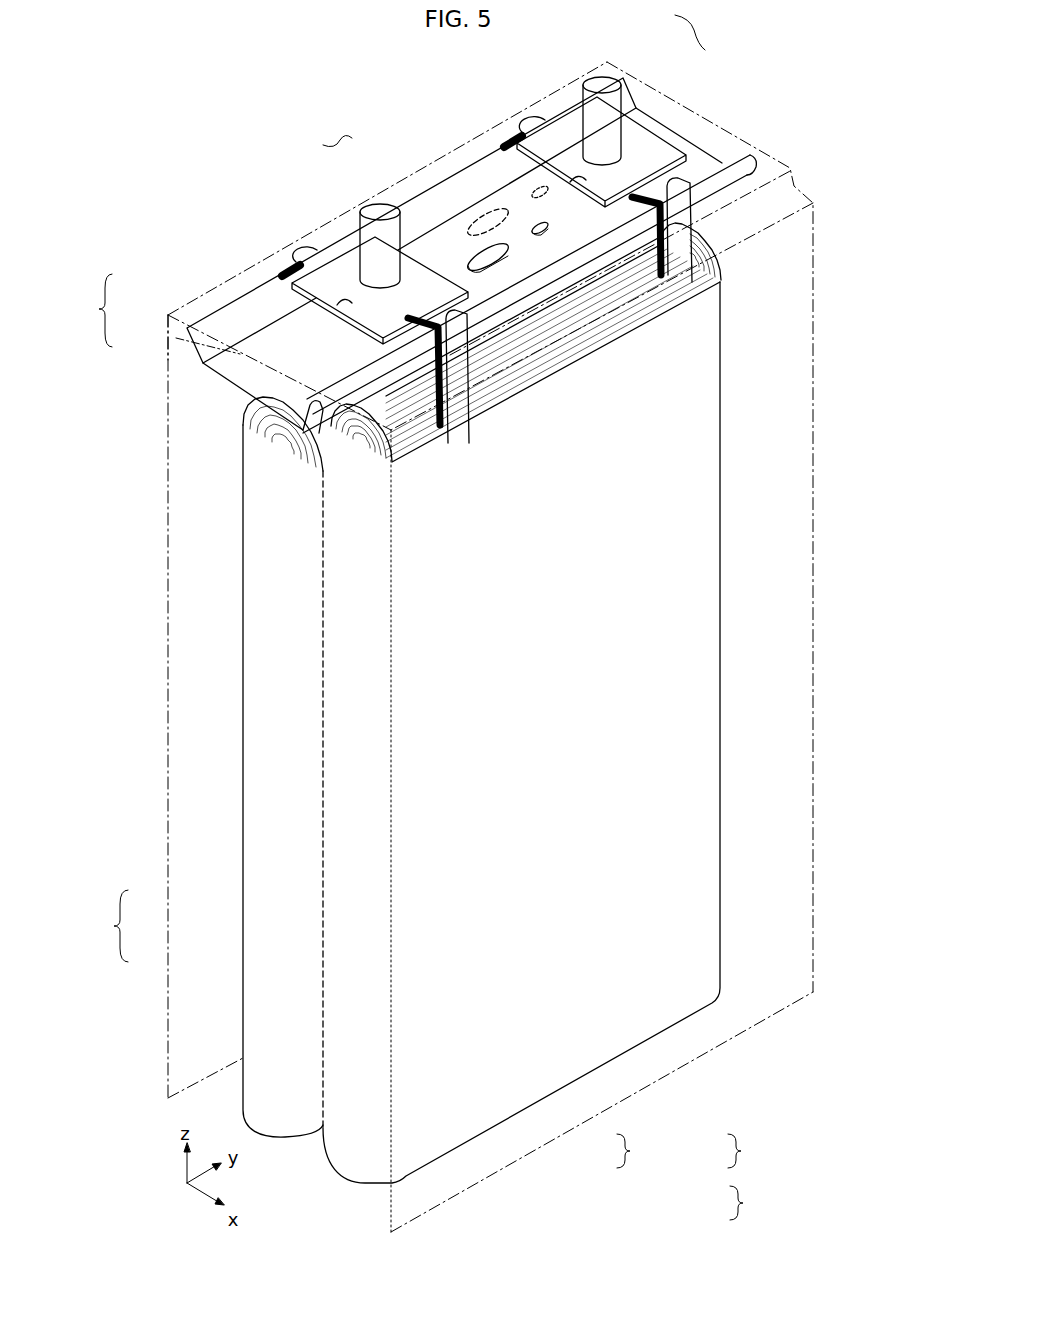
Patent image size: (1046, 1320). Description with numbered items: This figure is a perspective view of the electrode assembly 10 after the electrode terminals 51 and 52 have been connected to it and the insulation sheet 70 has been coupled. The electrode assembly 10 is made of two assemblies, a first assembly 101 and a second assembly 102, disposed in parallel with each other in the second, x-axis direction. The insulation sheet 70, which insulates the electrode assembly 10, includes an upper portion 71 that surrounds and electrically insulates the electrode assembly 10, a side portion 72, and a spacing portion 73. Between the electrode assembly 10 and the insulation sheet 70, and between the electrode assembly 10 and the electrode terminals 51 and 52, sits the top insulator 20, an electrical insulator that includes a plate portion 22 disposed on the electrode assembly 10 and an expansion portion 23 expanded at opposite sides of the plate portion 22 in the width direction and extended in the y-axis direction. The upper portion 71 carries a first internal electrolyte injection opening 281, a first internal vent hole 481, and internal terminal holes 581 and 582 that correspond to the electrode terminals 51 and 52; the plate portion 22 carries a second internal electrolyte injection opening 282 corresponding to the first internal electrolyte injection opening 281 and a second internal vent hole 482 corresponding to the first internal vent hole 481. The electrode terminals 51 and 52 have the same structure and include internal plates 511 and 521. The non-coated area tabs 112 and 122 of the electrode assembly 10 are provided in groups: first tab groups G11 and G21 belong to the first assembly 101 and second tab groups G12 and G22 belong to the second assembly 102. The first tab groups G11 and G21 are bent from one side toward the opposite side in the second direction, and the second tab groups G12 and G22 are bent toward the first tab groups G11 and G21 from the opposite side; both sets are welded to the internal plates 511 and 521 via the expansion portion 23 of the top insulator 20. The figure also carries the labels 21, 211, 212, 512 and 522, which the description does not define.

The electrode assembly 10 is at (407, 625).
The first assembly 101 is at (255, 903).
The second assembly 102 is at (330, 960).
The non-coated area tab 112 is at (468, 686).
The non-coated area tab 122 is at (645, 614).
The first tab group G11 is at (297, 262).
The second tab group G12 is at (470, 375).
The first tab group G21 is at (560, 132).
The second tab group G22 is at (683, 197).
The top insulator 20 is at (214, 384).
The electrode assembly 21 is at (490, 647).
The first electrode assembly 211 is at (490, 647).
The second electrode assembly 212 is at (602, 700).
The plate portion 22 is at (240, 393).
The expansion portion 23 is at (193, 355).
The first internal electrolyte injection opening 281 is at (537, 188).
The second internal electrolyte injection opening 282 is at (535, 225).
The first internal vent hole 481 is at (472, 218).
The second internal vent hole 482 is at (470, 258).
The electrode terminal 51 is at (380, 245).
The internal plate 511 is at (343, 262).
The first terminal post 512 is at (378, 212).
The electrode terminal 52 is at (614, 127).
The internal plate 521 is at (638, 140).
The second terminal post 522 is at (605, 82).
The internal terminal hole 581 is at (341, 308).
The internal terminal hole 582 is at (577, 183).
The insulation sheet 70 is at (359, 220).
The upper portion 71 is at (242, 337).
The side portion 72 is at (168, 340).
The spacing portion 73 is at (168, 318).